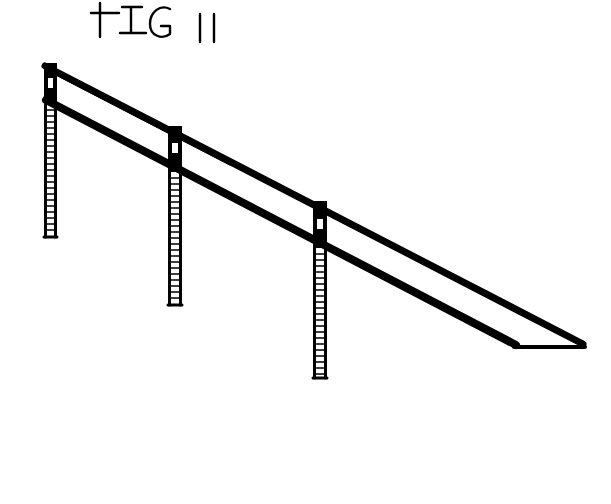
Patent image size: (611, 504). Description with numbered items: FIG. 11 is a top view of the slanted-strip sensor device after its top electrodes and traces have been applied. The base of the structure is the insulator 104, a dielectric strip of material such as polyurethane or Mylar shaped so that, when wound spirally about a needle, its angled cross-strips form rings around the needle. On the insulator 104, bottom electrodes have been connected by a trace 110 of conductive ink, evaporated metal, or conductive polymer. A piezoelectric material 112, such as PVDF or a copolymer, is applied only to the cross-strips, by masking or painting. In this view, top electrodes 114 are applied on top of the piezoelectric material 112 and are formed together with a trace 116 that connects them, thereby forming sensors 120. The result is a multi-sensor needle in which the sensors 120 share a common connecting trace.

The insulator 104 is at (535, 337).
The trace 110 is at (253, 172).
The piezoelectric material 112 is at (335, 215).
The top electrode 114 is at (57, 179).
The trace 116 is at (410, 296).
The sensors 120 is at (29, 237).